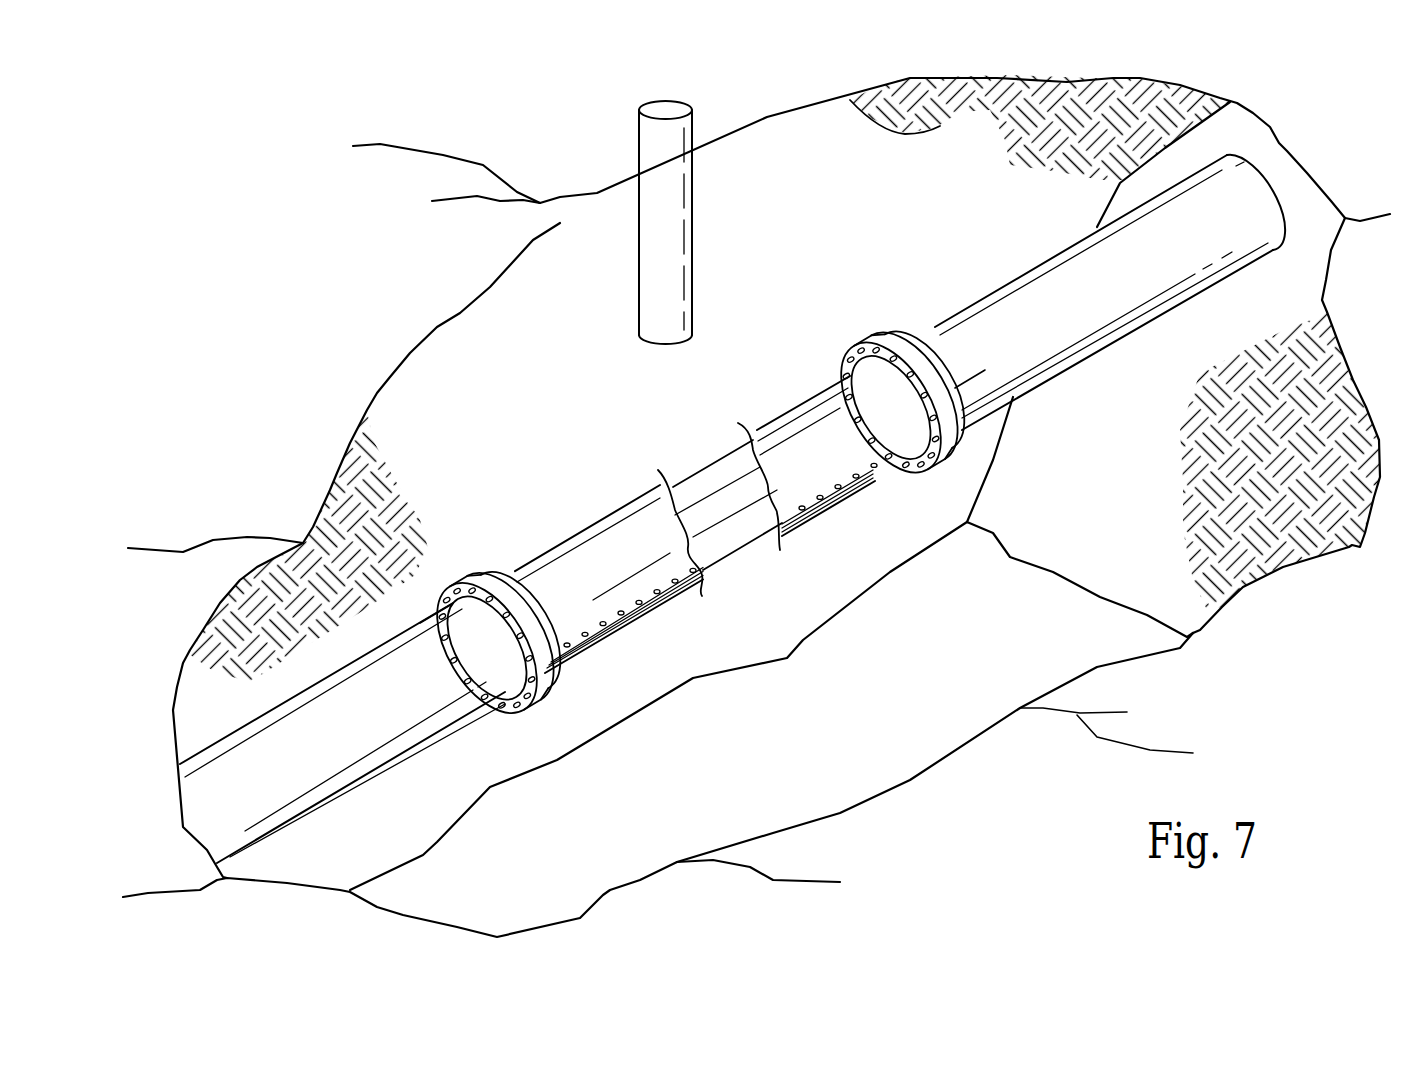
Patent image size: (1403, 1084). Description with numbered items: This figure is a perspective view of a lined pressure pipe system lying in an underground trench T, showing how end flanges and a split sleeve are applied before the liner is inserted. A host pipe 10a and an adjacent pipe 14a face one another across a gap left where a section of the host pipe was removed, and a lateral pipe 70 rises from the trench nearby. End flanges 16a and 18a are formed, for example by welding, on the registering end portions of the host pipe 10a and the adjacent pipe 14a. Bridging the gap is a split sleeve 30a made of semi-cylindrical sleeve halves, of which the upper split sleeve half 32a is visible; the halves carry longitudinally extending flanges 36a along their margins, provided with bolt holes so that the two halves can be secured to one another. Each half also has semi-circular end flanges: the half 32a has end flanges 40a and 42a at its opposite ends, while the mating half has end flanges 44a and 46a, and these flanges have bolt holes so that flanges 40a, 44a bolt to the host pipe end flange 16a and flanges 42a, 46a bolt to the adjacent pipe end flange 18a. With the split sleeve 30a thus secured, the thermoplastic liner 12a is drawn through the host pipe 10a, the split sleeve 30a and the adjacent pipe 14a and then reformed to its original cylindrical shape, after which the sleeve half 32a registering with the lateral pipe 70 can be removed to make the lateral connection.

The trench T is at (850, 100).
The lateral pipe 70 is at (668, 228).
The host pipe 10a is at (214, 707).
The liner 12a is at (732, 537).
The adjacent pipe 14a is at (1222, 262).
The end flange 16a is at (440, 601).
The end flange 18a is at (947, 380).
The split sleeve 30a is at (586, 487).
The split sleeve half 32a is at (800, 428).
The longitudinally extending flange 36a is at (852, 483).
The end flange 40a is at (480, 573).
The end flange 42a is at (892, 346).
The end flange 44a is at (552, 683).
The end flange 46a is at (925, 472).